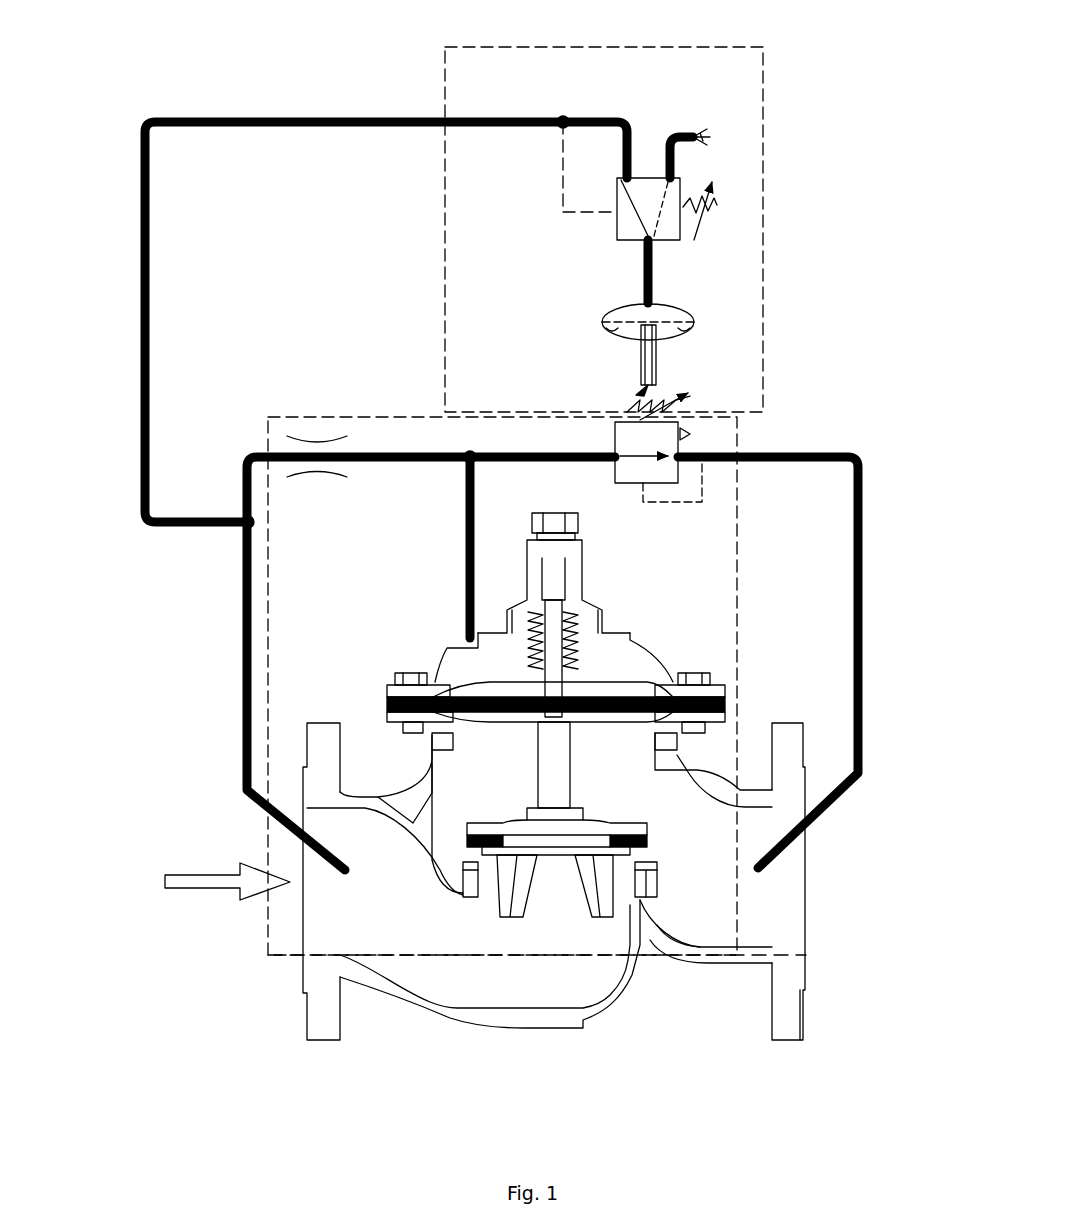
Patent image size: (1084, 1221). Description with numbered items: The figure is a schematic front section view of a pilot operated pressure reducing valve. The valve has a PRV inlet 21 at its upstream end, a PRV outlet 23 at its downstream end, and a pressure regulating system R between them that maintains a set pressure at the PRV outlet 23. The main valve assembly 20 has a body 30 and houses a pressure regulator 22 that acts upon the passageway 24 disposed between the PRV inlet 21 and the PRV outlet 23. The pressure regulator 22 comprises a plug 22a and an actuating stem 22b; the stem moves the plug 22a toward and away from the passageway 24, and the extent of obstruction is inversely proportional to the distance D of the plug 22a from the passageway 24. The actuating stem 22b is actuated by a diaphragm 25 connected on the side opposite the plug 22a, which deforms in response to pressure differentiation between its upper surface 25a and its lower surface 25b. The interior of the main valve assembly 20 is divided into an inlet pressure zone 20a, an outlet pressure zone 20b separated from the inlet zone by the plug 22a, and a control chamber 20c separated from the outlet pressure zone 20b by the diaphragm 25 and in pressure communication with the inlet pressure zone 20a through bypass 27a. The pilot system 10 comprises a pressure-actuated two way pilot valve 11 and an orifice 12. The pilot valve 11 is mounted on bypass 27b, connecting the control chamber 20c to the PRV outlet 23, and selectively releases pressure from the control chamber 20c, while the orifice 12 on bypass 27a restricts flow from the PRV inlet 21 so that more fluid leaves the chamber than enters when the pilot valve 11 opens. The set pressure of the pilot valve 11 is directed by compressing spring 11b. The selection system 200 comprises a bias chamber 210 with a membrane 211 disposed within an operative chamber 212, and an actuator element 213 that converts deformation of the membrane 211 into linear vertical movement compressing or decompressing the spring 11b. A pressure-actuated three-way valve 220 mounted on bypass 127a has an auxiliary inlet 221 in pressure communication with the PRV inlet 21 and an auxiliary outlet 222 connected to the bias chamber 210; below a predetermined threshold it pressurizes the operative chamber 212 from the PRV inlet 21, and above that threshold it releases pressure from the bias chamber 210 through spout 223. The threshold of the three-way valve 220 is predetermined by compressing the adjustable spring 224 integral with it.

The selection system 200 is at (687, 47).
The pressure-actuated three-way valve 220 is at (740, 168).
The auxiliary inlet 221 is at (632, 178).
The auxiliary outlet 222 is at (652, 242).
The spout 223 is at (690, 136).
The adjustable spring 224 is at (715, 213).
The bias chamber 210 is at (591, 329).
The membrane 211 is at (635, 323).
The operative chamber 212 is at (622, 313).
The actuator element 213 is at (640, 370).
The pilot valve 11 is at (748, 395).
The spring 11b is at (660, 395).
The pilot system 10 is at (805, 440).
The orifice 12 is at (312, 435).
The bypass 127a is at (135, 170).
The bypass 27a is at (200, 550).
The bypass 27b is at (867, 612).
The pressure regulating system R is at (268, 580).
The main valve assembly 20 is at (630, 1043).
The inlet pressure zone 20a is at (547, 973).
The outlet pressure zone 20b is at (728, 851).
The control chamber 20c is at (623, 676).
The PRV inlet 21 is at (297, 935).
The pressure regulator 22 is at (618, 915).
The plug 22a is at (628, 817).
The actuating stem 22b is at (573, 788).
The PRV outlet 23 is at (817, 918).
The passageway 24 is at (483, 866).
The diaphragm 25 is at (445, 712).
The upper surface 25a is at (455, 692).
The lower surface 25b is at (433, 745).
The body 30 is at (793, 1005).
The distance D is at (635, 857).